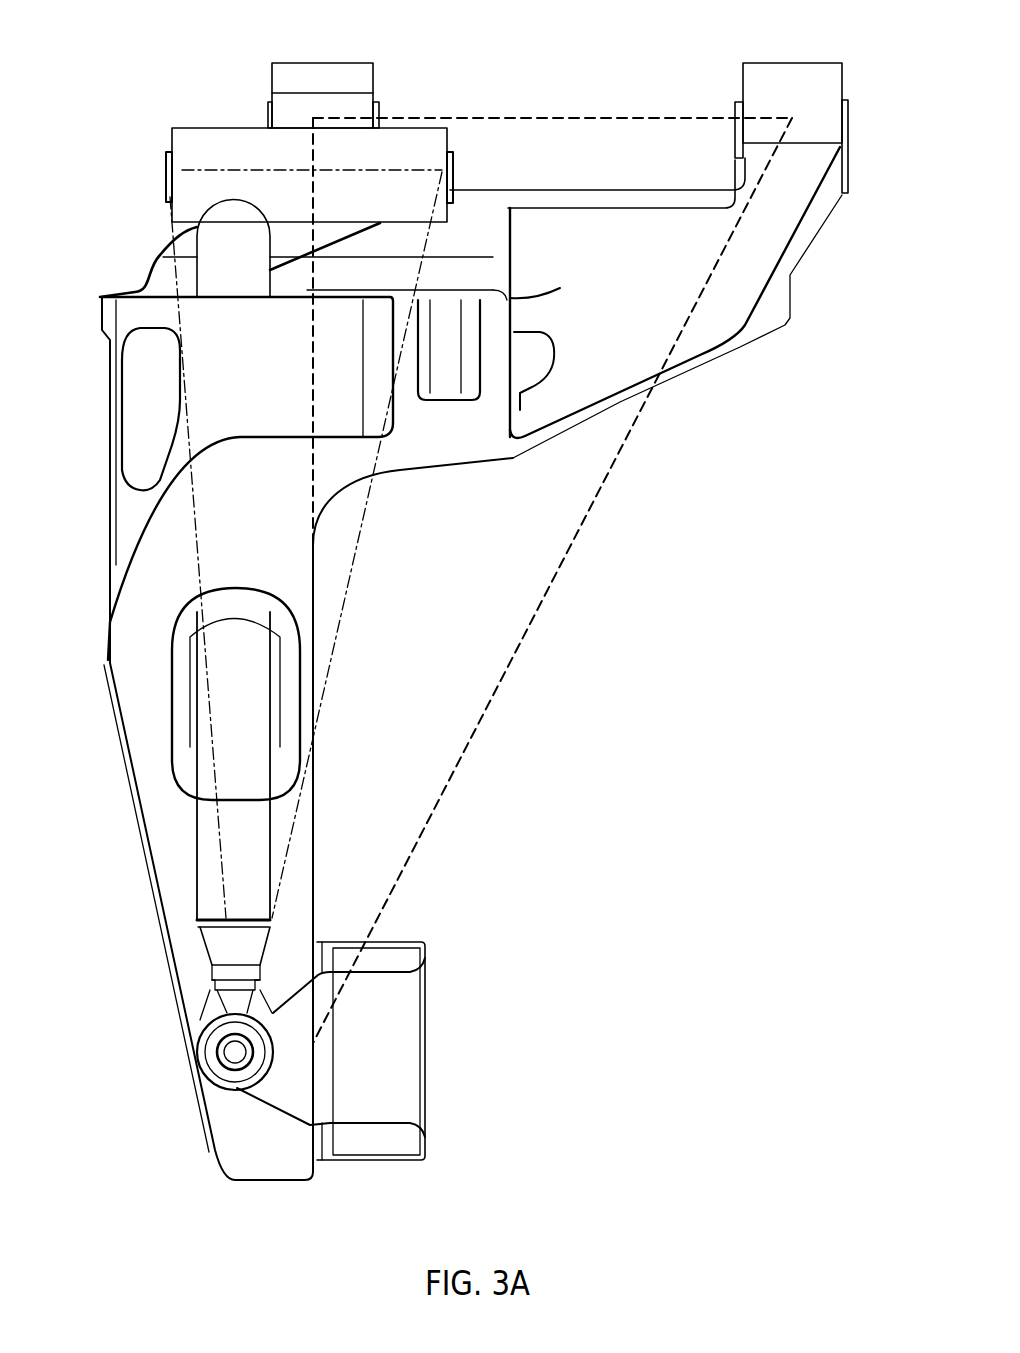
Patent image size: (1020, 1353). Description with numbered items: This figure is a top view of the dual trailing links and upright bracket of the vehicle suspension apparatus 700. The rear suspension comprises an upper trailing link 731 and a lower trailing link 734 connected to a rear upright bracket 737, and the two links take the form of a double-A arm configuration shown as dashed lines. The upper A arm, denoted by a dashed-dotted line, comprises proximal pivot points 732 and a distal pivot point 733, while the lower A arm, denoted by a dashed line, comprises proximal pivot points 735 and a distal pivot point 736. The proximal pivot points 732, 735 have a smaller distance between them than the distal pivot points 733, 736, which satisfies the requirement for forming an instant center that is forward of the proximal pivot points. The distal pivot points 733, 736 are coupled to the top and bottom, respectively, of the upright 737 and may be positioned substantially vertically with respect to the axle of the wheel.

The vehicle suspension apparatus 700 is at (690, 838).
The upper trailing link 731 is at (237, 793).
The proximal pivot points 732 is at (442, 170).
The distal pivot point 733 is at (223, 1050).
The lower trailing link 734 is at (778, 322).
The proximal pivot points 735 is at (792, 118).
The distal pivot point 736 is at (313, 1043).
The rear upright bracket 737 is at (387, 1018).